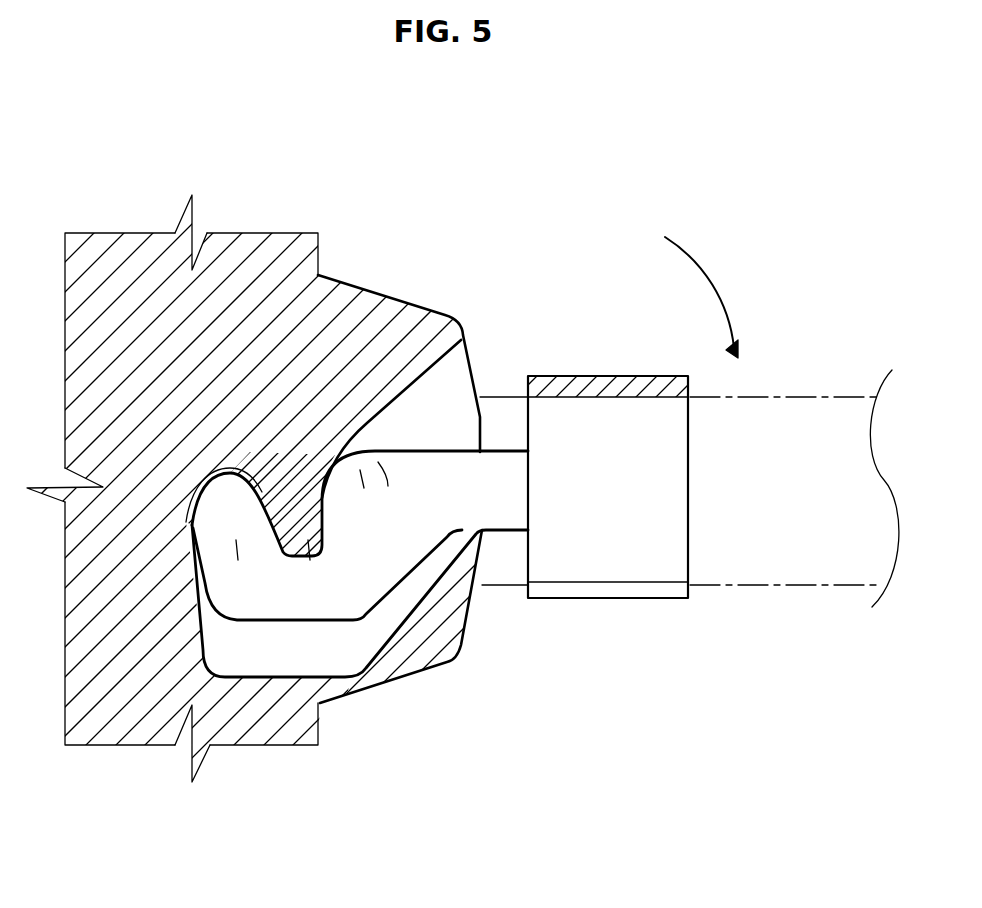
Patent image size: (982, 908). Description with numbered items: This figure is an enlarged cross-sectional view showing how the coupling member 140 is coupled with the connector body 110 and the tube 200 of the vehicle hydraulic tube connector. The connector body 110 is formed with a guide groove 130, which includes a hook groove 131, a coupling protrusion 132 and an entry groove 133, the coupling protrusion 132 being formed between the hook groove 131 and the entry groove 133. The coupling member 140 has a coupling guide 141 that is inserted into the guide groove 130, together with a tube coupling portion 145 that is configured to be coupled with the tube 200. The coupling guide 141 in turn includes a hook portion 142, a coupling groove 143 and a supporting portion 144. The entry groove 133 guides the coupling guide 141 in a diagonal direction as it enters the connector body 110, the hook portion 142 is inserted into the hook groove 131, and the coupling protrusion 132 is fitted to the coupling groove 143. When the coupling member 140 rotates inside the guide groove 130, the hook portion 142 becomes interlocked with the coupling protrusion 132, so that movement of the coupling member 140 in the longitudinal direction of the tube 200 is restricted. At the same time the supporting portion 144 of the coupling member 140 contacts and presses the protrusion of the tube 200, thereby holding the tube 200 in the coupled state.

The connector body 110 is at (100, 228).
The guide groove 130 is at (446, 450).
The hook groove 131 is at (240, 496).
The coupling protrusion 132 is at (300, 517).
The entry groove 133 is at (377, 434).
The coupling member 140 is at (647, 500).
The tube coupling portion 145 is at (643, 378).
The coupling guide 141 is at (340, 682).
The hook portion 142 is at (242, 552).
The coupling groove 143 is at (310, 553).
The supporting portion 144 is at (363, 480).
The tube 200 is at (800, 588).